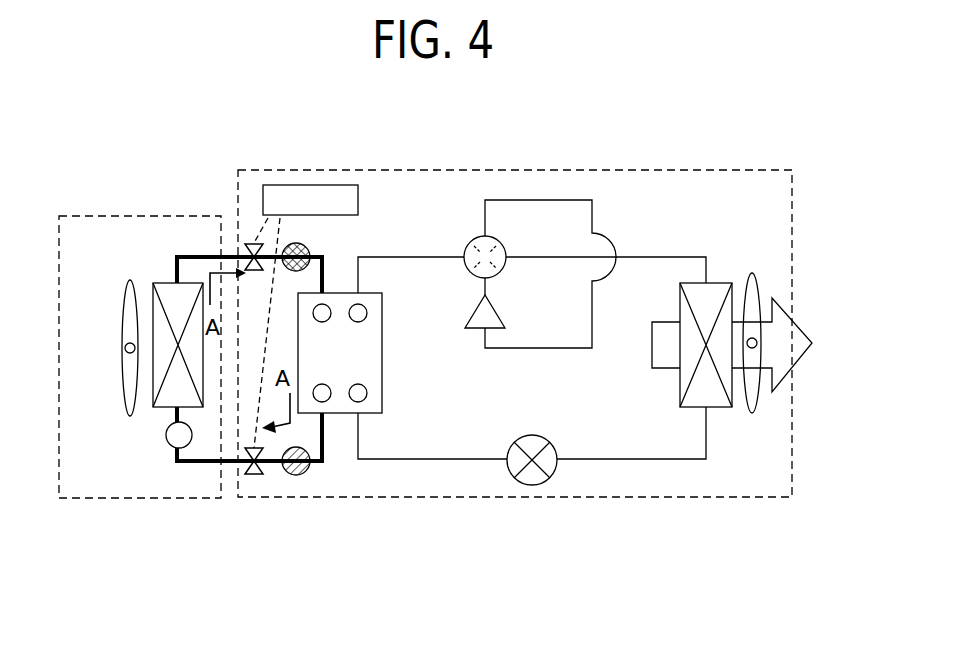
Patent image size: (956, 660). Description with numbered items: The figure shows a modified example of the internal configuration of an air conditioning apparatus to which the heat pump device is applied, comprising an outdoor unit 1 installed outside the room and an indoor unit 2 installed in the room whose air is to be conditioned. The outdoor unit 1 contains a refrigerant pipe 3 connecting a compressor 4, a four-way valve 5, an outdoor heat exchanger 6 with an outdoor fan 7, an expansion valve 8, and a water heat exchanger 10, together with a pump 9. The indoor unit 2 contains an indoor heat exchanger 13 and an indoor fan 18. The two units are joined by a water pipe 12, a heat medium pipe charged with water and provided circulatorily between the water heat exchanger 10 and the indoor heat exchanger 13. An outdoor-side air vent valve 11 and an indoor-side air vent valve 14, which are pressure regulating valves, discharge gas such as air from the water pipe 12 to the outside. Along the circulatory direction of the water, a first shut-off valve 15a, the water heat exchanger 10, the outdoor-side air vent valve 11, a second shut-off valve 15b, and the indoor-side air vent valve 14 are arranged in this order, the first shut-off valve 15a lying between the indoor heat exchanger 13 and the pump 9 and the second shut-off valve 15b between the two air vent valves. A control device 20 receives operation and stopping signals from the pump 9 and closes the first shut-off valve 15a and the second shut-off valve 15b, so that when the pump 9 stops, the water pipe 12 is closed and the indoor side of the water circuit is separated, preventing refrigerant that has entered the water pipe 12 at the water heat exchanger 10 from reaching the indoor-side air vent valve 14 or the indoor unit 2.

The outdoor unit 1 is at (715, 170).
The indoor unit 2 is at (108, 216).
The refrigerant pipe 3 is at (657, 257).
The compressor 4 is at (465, 311).
The four-way valve 5 is at (478, 240).
The outdoor heat exchanger 6 is at (718, 283).
The outdoor fan 7 is at (753, 274).
The expansion valve 8 is at (531, 435).
The pump 9 is at (306, 247).
The water heat exchanger 10 is at (382, 358).
The outdoor-side air vent valve 11 is at (301, 475).
The water pipe 12 is at (228, 465).
The indoor heat exchanger 13 is at (165, 283).
The indoor-side air vent valve 14 is at (168, 446).
The first shut-off valve 15a is at (250, 250).
The second shut-off valve 15b is at (260, 475).
The indoor fan 18 is at (128, 412).
The control device 20 is at (358, 198).